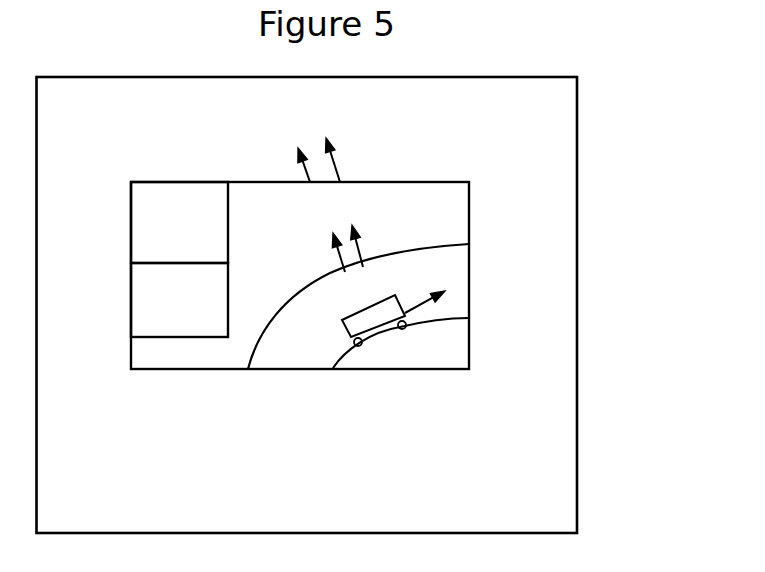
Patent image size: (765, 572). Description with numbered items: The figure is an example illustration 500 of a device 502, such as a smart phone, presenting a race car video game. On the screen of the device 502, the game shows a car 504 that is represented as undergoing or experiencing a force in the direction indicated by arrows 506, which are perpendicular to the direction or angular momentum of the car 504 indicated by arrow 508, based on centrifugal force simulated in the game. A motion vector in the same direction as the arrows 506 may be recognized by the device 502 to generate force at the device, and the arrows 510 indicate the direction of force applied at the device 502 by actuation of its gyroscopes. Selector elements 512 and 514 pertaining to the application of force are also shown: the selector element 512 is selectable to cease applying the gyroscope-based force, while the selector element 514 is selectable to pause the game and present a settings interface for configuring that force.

The example illustration 500 is at (588, 178).
The device 502 is at (471, 272).
The car 504 is at (346, 333).
The arrows 506 is at (365, 255).
The arrow 508 is at (412, 287).
The arrows 510 is at (340, 170).
The selector element 512 is at (130, 234).
The selector element 514 is at (130, 315).